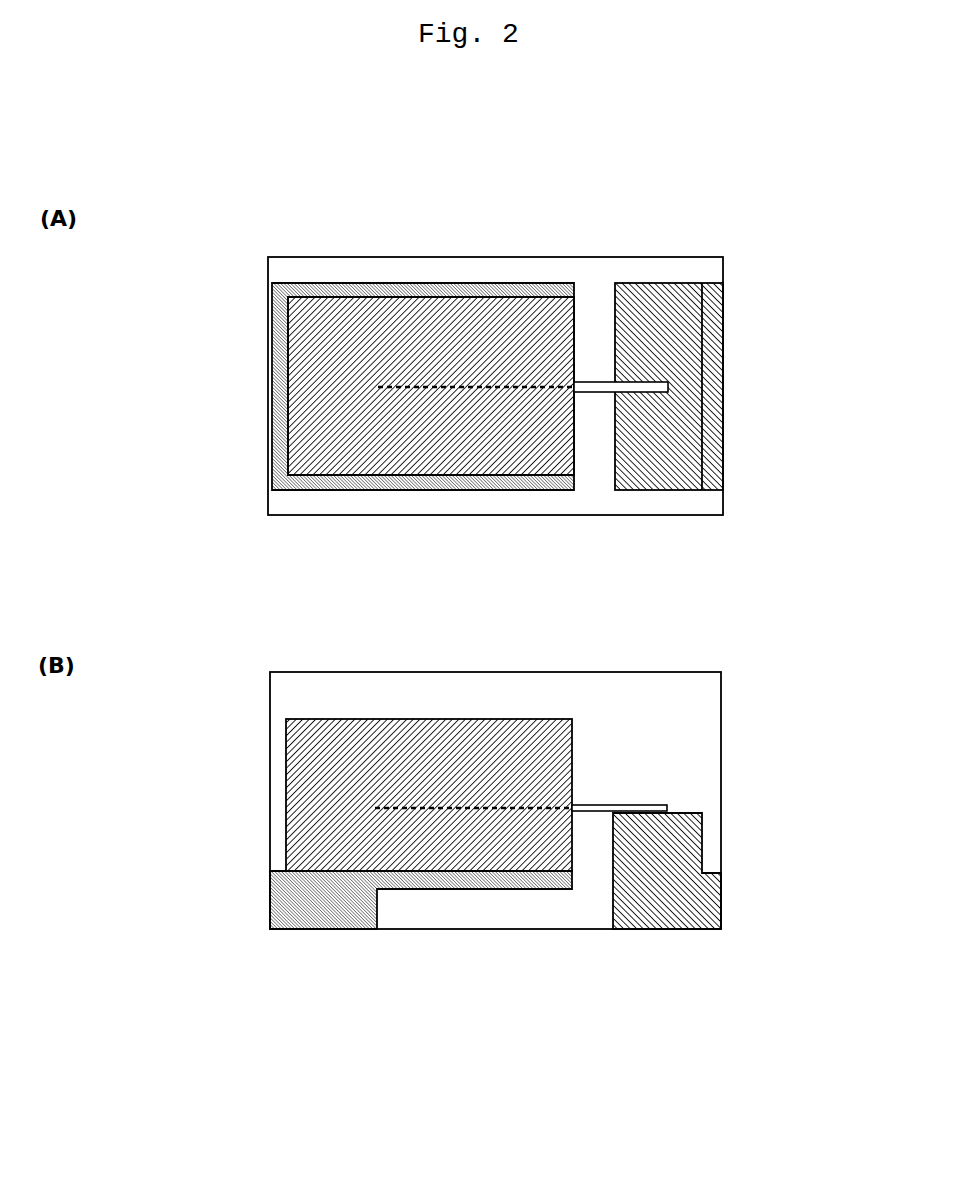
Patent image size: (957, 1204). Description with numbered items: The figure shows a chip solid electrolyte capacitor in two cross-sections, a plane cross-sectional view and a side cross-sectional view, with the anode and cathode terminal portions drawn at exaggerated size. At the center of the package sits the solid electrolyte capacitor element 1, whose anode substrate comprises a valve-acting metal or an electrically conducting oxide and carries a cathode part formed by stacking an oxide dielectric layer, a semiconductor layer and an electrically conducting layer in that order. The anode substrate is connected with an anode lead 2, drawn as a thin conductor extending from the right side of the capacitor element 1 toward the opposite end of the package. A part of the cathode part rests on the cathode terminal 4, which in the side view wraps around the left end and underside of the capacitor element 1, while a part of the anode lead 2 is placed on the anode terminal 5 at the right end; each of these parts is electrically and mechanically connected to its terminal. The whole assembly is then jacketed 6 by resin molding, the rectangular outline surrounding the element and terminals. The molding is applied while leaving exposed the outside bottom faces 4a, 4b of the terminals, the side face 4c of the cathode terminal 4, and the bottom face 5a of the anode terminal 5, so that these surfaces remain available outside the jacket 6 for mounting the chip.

The solid electrolyte capacitor element 1 is at (350, 337).
The anode lead 2 is at (548, 383).
The cathode terminal 4 is at (278, 445).
The bottom face of cathode terminal 4a is at (323, 930).
The bottom face of terminal 4b is at (278, 868).
The side face of cathode terminal 4c is at (268, 893).
The anode terminal 5 is at (683, 340).
The bottom face of anode terminal 5a is at (656, 930).
The jacket 6 is at (594, 488).